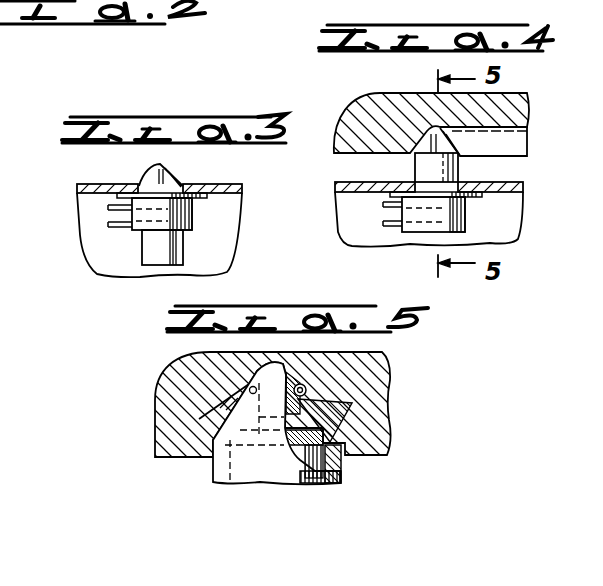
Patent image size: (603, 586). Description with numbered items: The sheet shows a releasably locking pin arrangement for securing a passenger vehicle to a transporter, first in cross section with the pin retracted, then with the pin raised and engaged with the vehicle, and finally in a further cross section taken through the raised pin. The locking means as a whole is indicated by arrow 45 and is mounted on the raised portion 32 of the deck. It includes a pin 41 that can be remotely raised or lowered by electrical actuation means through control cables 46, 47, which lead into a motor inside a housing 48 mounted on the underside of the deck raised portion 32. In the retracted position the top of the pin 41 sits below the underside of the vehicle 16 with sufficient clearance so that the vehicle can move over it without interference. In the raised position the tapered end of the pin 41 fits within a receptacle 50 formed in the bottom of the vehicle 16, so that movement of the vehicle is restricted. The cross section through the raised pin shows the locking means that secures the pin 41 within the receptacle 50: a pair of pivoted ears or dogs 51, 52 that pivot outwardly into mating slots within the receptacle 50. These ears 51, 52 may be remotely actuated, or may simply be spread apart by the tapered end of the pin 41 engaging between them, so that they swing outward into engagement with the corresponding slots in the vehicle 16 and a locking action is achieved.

In FIG. 4, the vehicle 16 is at (374, 100).
In FIG. 5, the vehicle 16 is at (385, 413).
In FIG. 3, the raised portion of the deck 32 is at (222, 187).
In FIG. 4, the raised portion of the deck 32 is at (350, 190).
In FIG. 3, the pin 41 is at (172, 186).
In FIG. 4, the pin 41 is at (458, 170).
In FIG. 5, the pin 41 is at (240, 469).
In FIG. 3, the locking means 45 is at (108, 167).
In FIG. 3, the control cable 46 is at (118, 209).
In FIG. 3, the control cable 47 is at (118, 228).
In FIG. 3, the housing 48 is at (185, 213).
In FIG. 4, the housing 48 is at (467, 212).
In FIG. 4, the receptacle 50 is at (455, 135).
In FIG. 5, the receptacle 50 is at (388, 445).
In FIG. 5, the pivoted ear 51 is at (202, 418).
In FIG. 5, the pivoted ear 52 is at (352, 400).